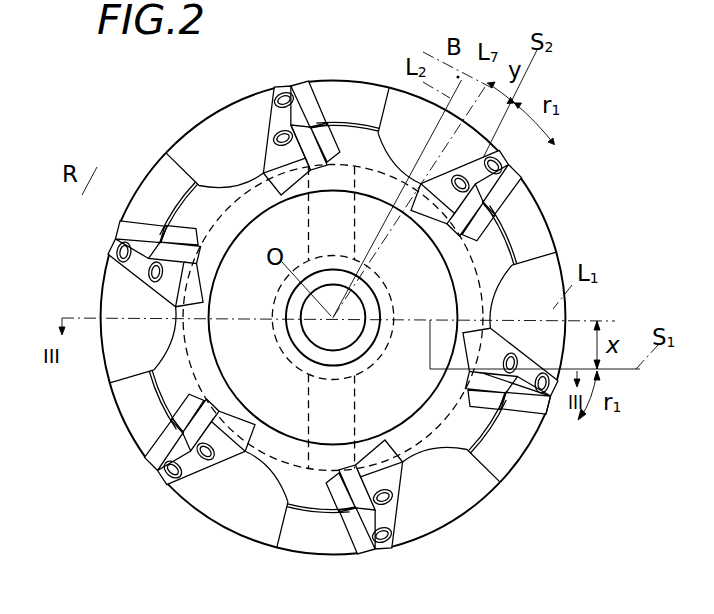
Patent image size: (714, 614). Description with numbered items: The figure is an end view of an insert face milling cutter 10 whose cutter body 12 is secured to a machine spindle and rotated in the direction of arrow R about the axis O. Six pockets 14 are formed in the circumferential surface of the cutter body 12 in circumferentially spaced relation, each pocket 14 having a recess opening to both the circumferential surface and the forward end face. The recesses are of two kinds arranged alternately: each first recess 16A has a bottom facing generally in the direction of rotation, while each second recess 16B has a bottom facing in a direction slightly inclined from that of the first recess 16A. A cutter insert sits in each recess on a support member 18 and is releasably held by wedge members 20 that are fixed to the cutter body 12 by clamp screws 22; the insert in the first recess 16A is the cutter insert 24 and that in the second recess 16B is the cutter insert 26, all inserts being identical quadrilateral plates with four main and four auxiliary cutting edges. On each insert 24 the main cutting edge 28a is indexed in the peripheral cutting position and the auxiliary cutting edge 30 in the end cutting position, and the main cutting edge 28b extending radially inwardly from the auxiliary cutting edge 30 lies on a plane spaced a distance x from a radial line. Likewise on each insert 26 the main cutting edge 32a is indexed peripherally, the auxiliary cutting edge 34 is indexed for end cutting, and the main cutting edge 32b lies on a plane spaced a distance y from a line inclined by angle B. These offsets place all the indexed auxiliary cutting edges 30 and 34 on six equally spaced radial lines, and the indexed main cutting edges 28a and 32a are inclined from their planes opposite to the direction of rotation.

The insert face milling cutter 10 is at (130, 147).
The cutter body 12 is at (173, 137).
The pockets 14 is at (400, 100).
The first recess 16A is at (324, 310).
The second recess 16B is at (152, 213).
The support member 18 is at (333, 90).
The wedge members 20 is at (273, 127).
The clamp screws 22 is at (298, 100).
The cutter insert 24 is at (301, 103).
The cutter insert 26 is at (140, 240).
The main cutting edge 28a is at (538, 403).
The main cutting edge 28b is at (486, 365).
The auxiliary cutting edge 30 is at (462, 375).
The main cutting edge 32a is at (480, 188).
The main cutting edge 32b is at (397, 238).
The auxiliary cutting edge 34 is at (470, 200).